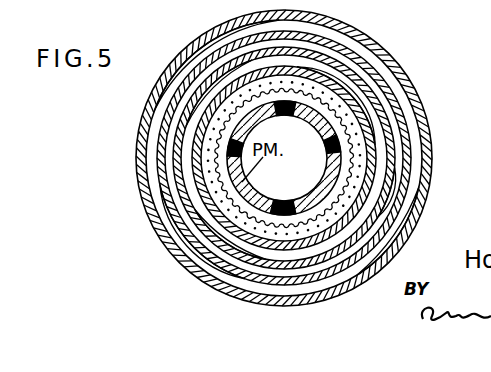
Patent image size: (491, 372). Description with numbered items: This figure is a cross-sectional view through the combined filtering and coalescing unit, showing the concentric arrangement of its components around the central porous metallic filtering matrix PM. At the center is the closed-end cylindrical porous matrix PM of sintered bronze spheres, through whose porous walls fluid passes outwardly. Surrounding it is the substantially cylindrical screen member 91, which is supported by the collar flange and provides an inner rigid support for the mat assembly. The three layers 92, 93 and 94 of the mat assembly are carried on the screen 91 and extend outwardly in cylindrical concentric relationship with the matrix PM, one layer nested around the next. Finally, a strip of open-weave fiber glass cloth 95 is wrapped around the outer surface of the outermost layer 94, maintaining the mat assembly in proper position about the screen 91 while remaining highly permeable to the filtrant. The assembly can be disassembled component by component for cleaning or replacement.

The screen member 91 is at (350, 123).
The mat assembly layer 92 is at (368, 113).
The mat assembly layer 93 is at (390, 118).
The mat assembly layer 94 is at (407, 137).
The fiber glass cloth strip 95 is at (428, 183).